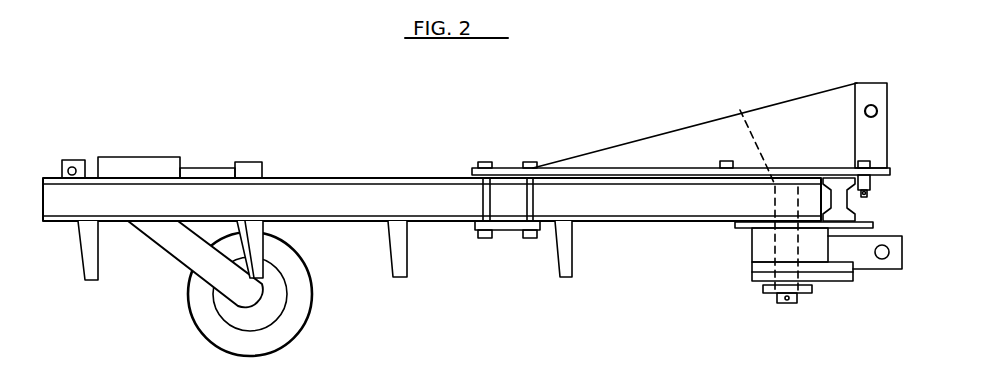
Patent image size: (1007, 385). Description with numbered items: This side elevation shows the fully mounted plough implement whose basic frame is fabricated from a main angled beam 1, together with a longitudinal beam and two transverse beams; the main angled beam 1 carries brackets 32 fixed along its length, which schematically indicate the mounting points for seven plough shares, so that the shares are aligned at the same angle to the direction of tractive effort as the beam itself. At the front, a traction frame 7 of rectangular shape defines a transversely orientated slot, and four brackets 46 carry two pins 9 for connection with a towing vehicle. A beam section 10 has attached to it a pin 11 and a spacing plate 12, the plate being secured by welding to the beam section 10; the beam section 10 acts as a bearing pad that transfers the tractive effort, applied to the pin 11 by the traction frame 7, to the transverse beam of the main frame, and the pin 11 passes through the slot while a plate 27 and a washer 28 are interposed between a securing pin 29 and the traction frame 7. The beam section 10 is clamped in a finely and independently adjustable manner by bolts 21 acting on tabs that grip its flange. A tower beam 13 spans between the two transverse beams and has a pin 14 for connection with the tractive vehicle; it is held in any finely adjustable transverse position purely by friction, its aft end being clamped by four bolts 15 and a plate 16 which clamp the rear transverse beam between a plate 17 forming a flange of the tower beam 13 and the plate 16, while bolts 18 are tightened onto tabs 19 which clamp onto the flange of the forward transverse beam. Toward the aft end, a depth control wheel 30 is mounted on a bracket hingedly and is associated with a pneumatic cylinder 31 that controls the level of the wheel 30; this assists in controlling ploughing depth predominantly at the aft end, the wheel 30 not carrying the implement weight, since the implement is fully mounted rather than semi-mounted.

The main angled beam 1 is at (334, 193).
The traction frame 7 is at (762, 250).
The pins 9 is at (883, 258).
The beam section 10 is at (762, 191).
The pin 11 is at (788, 307).
The spacing plate 12 is at (743, 232).
The tower beam 13 is at (805, 123).
The pin 14 is at (873, 104).
The bolts 15 is at (481, 161).
The plate 16 is at (503, 227).
The plate 17 is at (583, 170).
The bolts 18 is at (868, 158).
The tabs 19 is at (877, 186).
The bolts 21 is at (722, 158).
The plate 27 is at (837, 278).
The washer 28 is at (808, 297).
The securing pin 29 is at (780, 295).
The depth control wheel 30 is at (298, 307).
The pneumatic cylinder 31 is at (172, 157).
The brackets 32 is at (93, 262).
The brackets 46 is at (867, 243).